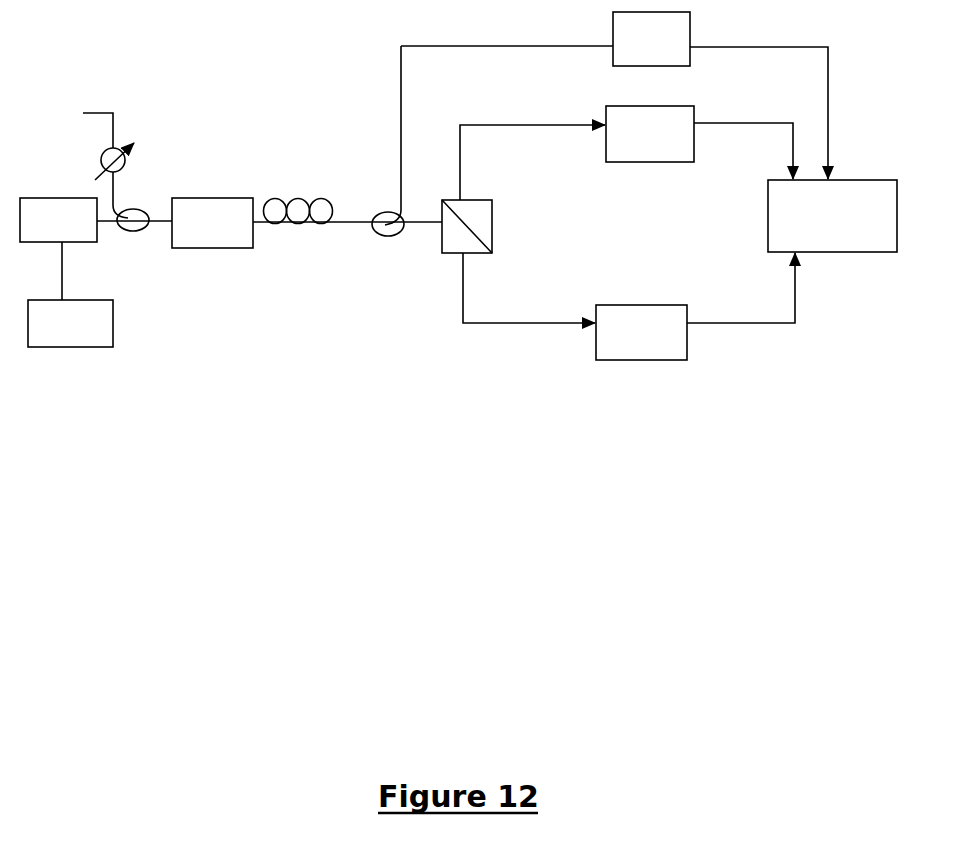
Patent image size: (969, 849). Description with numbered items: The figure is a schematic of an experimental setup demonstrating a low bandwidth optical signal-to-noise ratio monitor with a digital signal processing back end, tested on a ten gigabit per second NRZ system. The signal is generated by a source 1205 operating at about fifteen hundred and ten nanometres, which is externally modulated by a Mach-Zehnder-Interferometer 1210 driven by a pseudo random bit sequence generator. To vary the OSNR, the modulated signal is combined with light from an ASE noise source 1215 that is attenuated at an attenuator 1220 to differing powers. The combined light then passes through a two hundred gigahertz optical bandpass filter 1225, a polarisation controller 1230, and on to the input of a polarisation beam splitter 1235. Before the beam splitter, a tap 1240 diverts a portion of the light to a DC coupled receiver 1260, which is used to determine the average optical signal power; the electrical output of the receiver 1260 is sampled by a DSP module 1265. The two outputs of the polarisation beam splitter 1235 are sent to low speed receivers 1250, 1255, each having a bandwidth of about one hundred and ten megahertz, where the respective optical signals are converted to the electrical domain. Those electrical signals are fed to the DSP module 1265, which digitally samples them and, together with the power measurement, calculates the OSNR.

The 1510 nm source 1205 is at (90, 333).
The Mach-Zehnder-Interferometer 1210 is at (80, 231).
The ASE noise source 1215 is at (85, 139).
The attenuator 1220 is at (143, 171).
The optical bandpass filter 1225 is at (232, 230).
The polarisation controller 1230 is at (298, 198).
The polarisation beam splitter 1235 is at (501, 226).
The tap 1240 is at (381, 161).
The low speed receiver 1250 is at (668, 140).
The low speed receiver 1255 is at (657, 340).
The DC coupled receiver 1260 is at (651, 39).
The DSP module 1265 is at (853, 215).